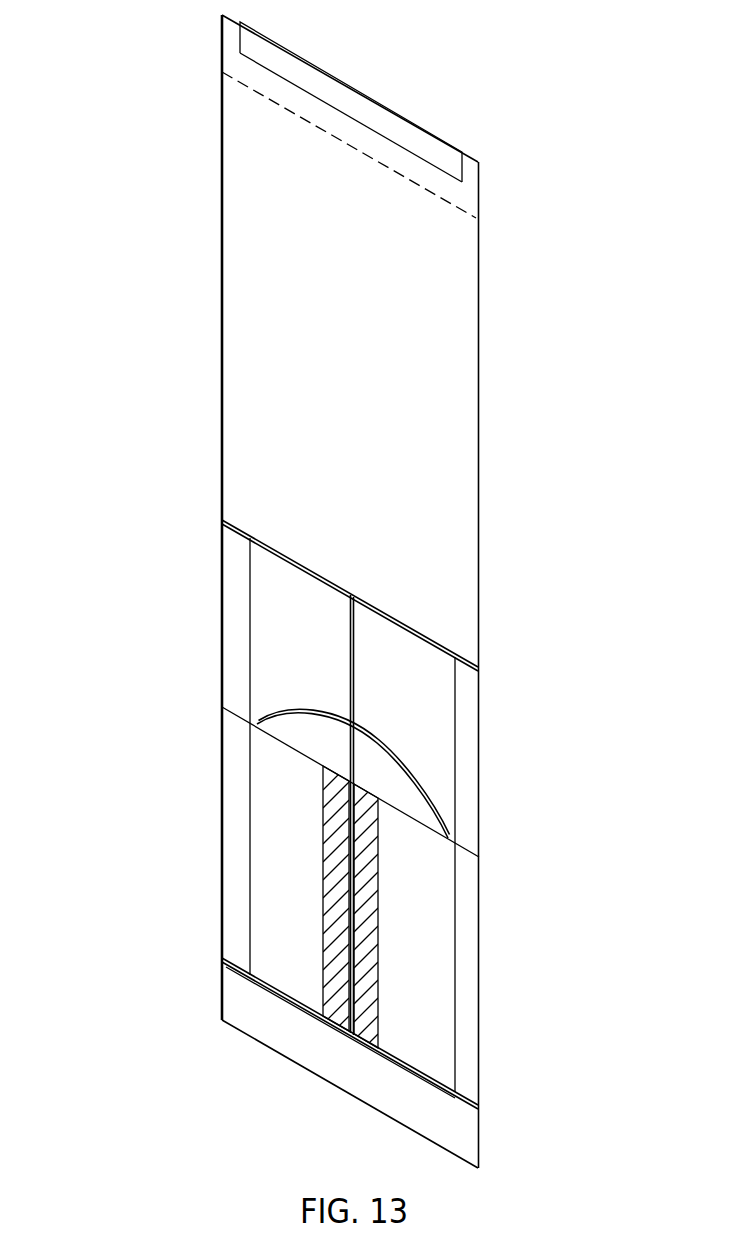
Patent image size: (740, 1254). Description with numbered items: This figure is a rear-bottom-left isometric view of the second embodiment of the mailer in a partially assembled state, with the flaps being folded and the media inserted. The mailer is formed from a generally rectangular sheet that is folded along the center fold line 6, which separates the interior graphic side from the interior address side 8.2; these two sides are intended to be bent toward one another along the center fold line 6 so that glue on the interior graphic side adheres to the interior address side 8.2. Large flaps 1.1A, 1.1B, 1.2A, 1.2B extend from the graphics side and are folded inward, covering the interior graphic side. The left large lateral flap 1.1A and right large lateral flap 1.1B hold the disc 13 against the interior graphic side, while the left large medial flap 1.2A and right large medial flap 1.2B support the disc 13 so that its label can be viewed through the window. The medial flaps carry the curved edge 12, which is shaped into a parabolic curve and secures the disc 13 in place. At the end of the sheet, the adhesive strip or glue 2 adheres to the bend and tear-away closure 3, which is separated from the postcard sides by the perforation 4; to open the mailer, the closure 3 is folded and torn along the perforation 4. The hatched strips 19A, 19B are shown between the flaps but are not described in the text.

The adhesive strip or glue 2 is at (352, 100).
The bend and tear-away closure 3 is at (232, 43).
The perforation 4 is at (468, 213).
The center fold line 6 is at (265, 538).
The interior address side 8.2 is at (398, 376).
The curved edge 12 is at (270, 717).
The disc 13 is at (357, 760).
The left large lateral flap 1.1A is at (444, 952).
The right large lateral flap 1.1B is at (319, 913).
The left large medial flap 1.2A is at (446, 708).
The right large medial flap 1.2B is at (343, 660).
The right hatched strip 19A is at (378, 980).
The left hatched strip 19B is at (323, 820).